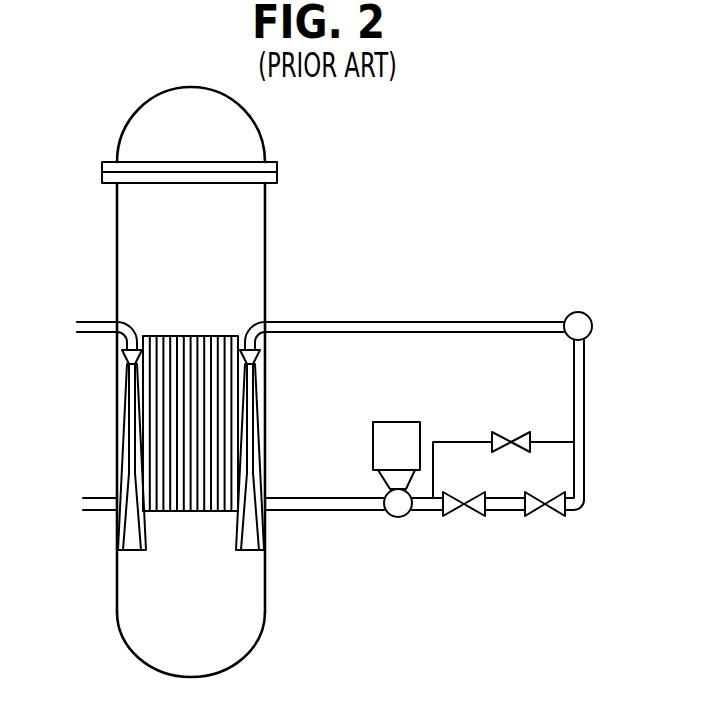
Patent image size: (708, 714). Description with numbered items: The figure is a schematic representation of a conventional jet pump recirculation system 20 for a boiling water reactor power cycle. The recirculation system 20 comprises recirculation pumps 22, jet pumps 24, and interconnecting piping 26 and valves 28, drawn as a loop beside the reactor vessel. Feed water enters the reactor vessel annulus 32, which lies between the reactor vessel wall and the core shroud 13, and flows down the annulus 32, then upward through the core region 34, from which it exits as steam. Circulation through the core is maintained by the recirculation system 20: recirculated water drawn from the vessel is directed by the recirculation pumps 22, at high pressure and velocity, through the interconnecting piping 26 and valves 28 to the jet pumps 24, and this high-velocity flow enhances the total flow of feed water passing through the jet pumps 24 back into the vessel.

The core shroud 13 is at (143, 434).
The recirculation system 20 is at (420, 260).
The recirculation pumps 22 is at (399, 422).
The jet pumps 24 is at (253, 446).
The interconnecting piping 26 is at (524, 321).
The valves 28 is at (535, 492).
The reactor vessel annulus 32 is at (259, 386).
The core region 34 is at (165, 336).